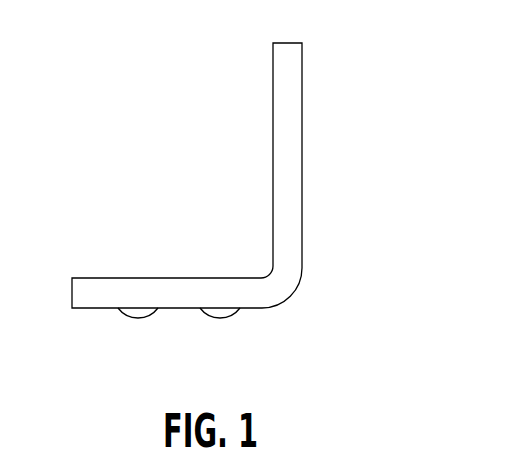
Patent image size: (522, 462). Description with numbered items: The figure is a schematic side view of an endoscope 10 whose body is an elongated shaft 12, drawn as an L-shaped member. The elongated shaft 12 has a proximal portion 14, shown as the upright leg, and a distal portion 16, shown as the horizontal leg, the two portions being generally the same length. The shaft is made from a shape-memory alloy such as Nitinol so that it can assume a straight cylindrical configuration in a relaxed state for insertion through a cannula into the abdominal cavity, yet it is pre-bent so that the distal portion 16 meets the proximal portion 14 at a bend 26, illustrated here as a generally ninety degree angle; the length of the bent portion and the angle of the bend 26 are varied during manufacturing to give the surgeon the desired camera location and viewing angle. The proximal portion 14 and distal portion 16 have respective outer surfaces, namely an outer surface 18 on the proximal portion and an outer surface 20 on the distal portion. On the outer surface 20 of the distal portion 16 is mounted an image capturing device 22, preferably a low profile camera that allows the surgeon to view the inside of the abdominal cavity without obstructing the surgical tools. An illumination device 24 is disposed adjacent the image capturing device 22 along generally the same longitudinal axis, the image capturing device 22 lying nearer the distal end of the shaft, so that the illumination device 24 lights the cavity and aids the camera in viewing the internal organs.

The endoscope 10 is at (331, 40).
The elongated shaft 12 is at (292, 175).
The proximal portion 14 is at (292, 103).
The distal portion 16 is at (98, 278).
The outer surface 18 is at (303, 228).
The outer surface 20 is at (178, 308).
The image capturing device 22 is at (138, 318).
The illumination device 24 is at (220, 318).
The bend 26 is at (257, 260).